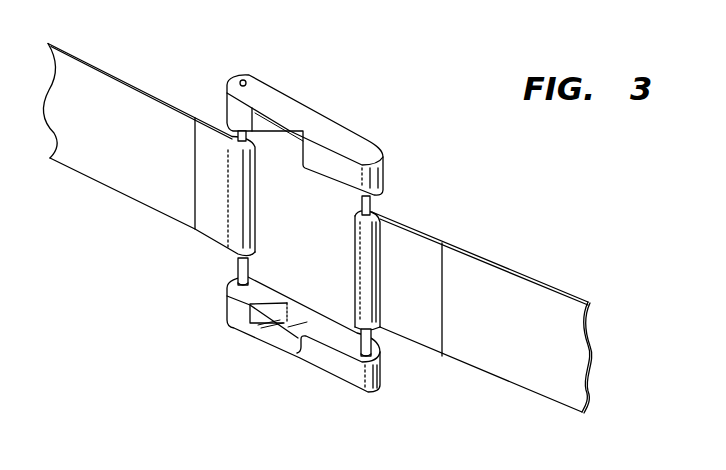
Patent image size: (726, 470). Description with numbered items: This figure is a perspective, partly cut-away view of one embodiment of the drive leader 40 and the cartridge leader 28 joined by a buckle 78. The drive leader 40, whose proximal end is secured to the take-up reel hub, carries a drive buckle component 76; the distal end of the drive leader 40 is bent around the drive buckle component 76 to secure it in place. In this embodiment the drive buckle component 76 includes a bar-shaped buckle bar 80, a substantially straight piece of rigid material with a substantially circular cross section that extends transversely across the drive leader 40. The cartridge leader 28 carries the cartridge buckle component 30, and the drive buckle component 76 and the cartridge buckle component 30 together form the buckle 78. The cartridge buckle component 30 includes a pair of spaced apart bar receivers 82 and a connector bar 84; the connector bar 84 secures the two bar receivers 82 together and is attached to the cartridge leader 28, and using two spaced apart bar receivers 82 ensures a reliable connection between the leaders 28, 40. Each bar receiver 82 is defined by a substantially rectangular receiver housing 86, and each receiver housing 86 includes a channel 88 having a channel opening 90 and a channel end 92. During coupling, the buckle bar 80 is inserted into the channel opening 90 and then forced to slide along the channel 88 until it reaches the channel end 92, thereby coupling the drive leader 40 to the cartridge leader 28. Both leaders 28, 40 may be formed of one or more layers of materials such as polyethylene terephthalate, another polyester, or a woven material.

The cartridge leader 28 is at (136, 68).
The drive leader 40 is at (522, 260).
The buckle 78 is at (457, 132).
The cartridge buckle component 30 is at (388, 138).
The bar receiver 82 is at (308, 227).
The receiver housing 86 is at (328, 126).
The connector bar 84 is at (237, 263).
The drive buckle component 76 is at (380, 200).
The buckle bar 80 is at (388, 353).
The channel 88 is at (337, 336).
The channel opening 90 is at (277, 329).
The channel end 92 is at (388, 378).